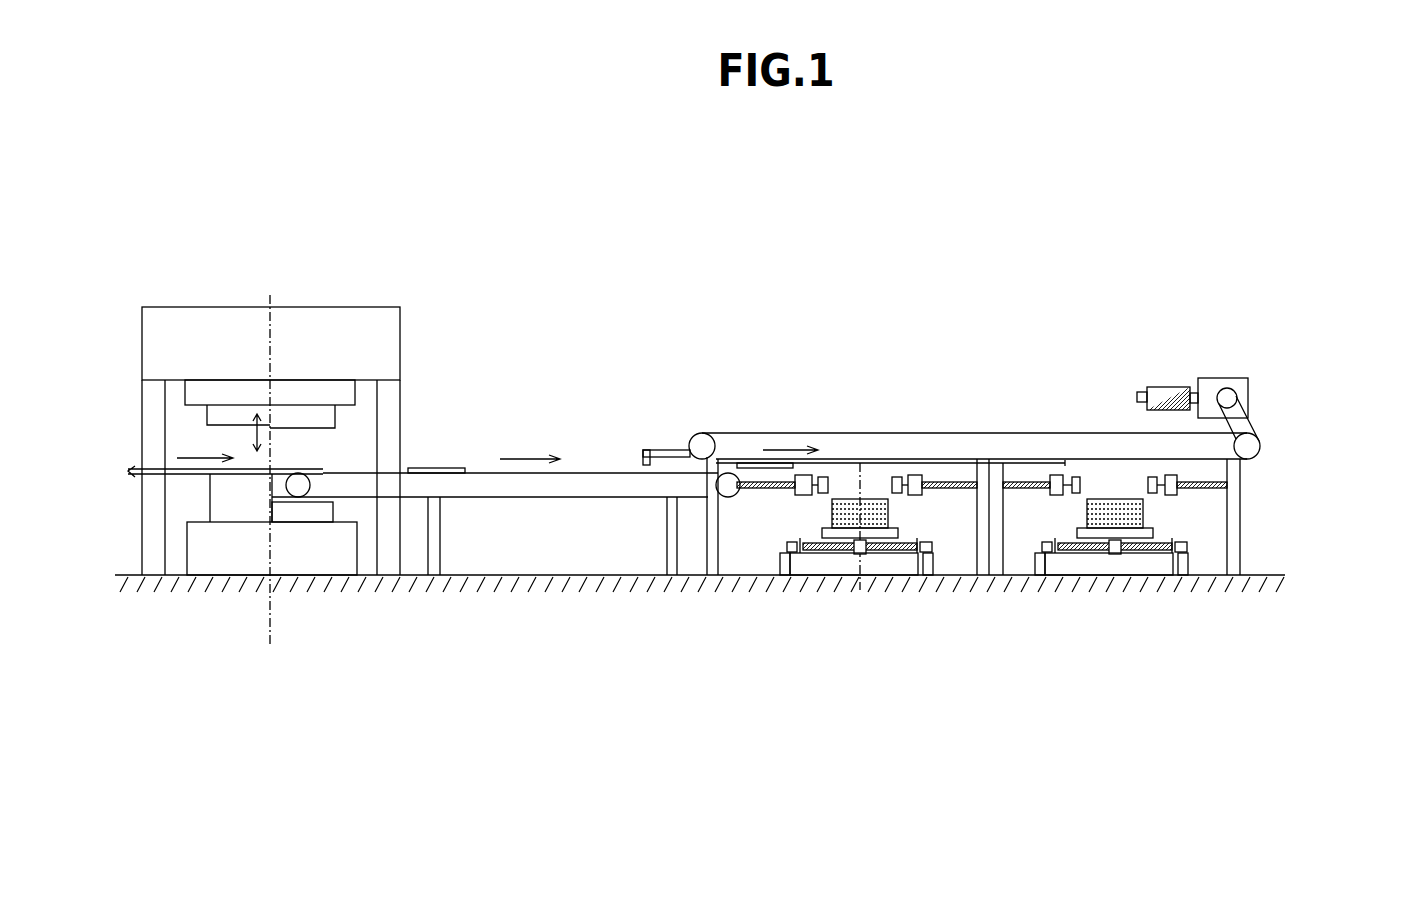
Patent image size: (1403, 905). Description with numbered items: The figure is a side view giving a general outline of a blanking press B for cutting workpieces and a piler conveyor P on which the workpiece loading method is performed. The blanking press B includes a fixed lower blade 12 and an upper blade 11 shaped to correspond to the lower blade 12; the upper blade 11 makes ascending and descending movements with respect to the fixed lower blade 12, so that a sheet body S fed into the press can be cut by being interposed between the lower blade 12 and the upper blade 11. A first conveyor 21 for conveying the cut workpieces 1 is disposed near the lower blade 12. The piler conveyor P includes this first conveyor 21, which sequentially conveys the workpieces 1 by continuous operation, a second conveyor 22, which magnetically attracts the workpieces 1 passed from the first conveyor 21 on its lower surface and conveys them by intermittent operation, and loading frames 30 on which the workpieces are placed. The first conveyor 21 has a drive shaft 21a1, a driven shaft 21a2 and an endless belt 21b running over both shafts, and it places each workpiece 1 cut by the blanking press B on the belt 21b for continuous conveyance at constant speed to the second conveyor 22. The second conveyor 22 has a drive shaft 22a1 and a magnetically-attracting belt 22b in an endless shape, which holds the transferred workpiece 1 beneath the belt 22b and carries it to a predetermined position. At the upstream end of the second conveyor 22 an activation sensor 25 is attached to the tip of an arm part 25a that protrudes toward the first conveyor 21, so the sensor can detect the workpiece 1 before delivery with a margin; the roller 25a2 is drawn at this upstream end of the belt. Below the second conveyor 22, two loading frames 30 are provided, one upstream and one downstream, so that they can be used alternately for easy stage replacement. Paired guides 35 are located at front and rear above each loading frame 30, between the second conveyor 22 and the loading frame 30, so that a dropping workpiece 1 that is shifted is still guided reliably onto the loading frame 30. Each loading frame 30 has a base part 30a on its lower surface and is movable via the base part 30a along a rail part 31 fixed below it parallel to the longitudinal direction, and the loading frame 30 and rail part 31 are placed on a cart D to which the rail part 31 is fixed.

The blanking press B is at (363, 327).
The upper blade 11 is at (313, 418).
The lower blade 12 is at (243, 498).
The sheet body S is at (185, 475).
The workpiece 1 is at (437, 467).
The first conveyor 21 is at (487, 487).
The belt 21b is at (563, 472).
The drive shaft 21a1 is at (732, 485).
The driven shaft 21a2 is at (303, 490).
The activation sensor 25 is at (645, 457).
The arm part 25a is at (677, 452).
The transfer roller 25a2 is at (703, 438).
The second conveyor 22 is at (802, 440).
The magnetically-attracting belt 22b is at (887, 453).
The drive shaft 22a1 is at (1255, 443).
The piler conveyor P is at (1022, 346).
The guides 35 is at (818, 497).
The loading frame 30 is at (893, 527).
The base part 30a is at (867, 550).
The rail part 31 is at (818, 550).
The cart D is at (900, 562).